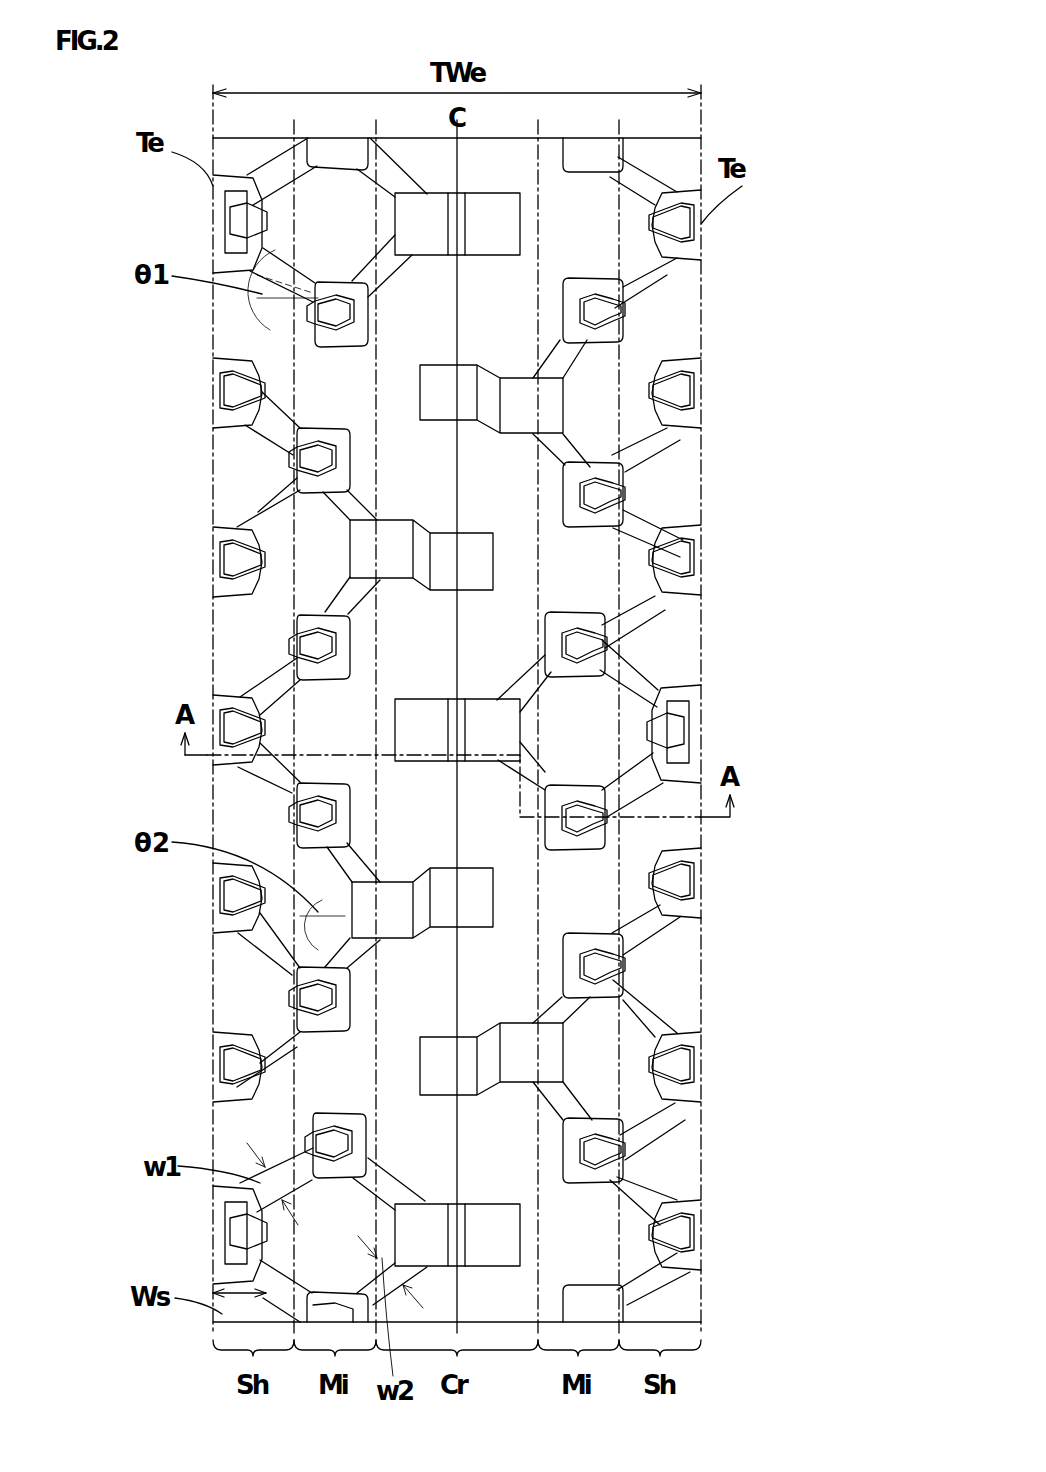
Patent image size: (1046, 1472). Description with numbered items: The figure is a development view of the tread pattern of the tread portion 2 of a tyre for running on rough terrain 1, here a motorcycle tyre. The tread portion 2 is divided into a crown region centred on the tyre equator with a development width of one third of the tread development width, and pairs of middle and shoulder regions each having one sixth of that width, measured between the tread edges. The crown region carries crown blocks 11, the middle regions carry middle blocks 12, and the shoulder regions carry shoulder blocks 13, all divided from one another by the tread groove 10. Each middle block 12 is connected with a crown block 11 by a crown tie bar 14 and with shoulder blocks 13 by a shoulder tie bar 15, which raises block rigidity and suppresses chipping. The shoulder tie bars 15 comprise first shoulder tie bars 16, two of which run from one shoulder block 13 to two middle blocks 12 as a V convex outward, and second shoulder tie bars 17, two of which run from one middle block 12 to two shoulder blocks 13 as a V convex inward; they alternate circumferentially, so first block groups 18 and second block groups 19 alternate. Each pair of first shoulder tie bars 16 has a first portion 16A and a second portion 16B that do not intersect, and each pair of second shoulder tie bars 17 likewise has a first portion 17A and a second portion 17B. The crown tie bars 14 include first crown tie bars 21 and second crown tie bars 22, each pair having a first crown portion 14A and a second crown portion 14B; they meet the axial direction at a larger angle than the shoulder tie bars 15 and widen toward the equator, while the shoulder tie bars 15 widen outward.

The tyre for running on rough terrain 1 is at (836, 128).
The tread portion 2 is at (776, 152).
The tread groove 10 is at (603, 729).
The crown block 11 is at (475, 560).
The middle block 12 is at (300, 455).
The shoulder block 13 is at (235, 369).
The crown tie bar 14 is at (496, 721).
The first crown portion 14A is at (570, 1005).
The second crown portion 14B is at (695, 1101).
The shoulder tie bar 15 is at (263, 508).
The first shoulder tie bar 16 is at (496, 730).
The first portion 16A is at (648, 680).
The second portion 16B is at (637, 782).
The second shoulder tie bar 17 is at (496, 731).
The first portion 17A is at (637, 522).
The second portion 17B is at (655, 505).
The first block group 18 is at (198, 766).
The second block group 19 is at (177, 1060).
The first crown tie bar 21 is at (567, 1102).
The second crown tie bar 22 is at (528, 775).